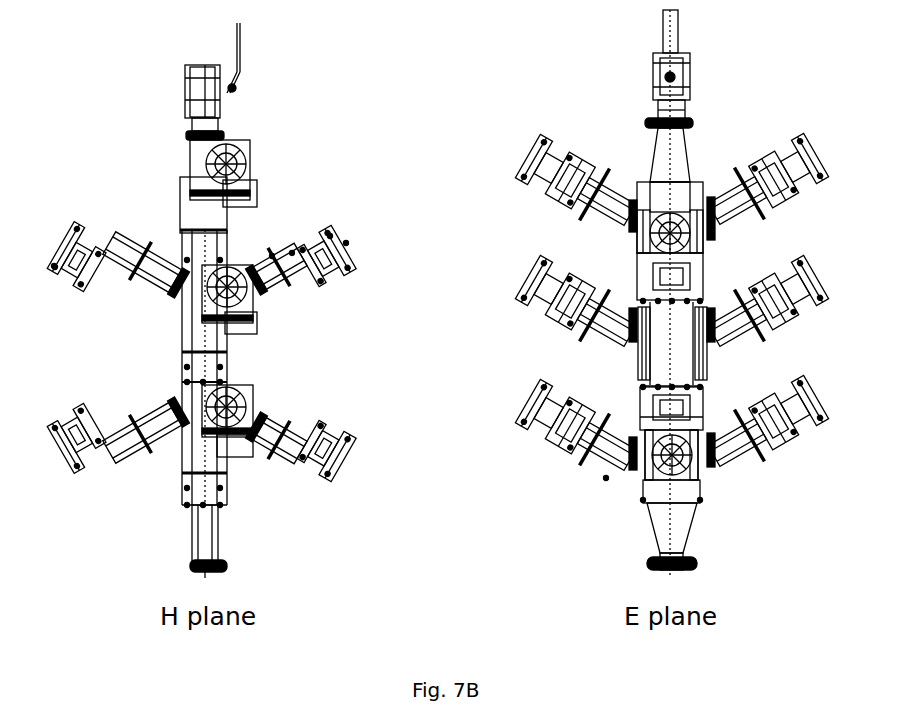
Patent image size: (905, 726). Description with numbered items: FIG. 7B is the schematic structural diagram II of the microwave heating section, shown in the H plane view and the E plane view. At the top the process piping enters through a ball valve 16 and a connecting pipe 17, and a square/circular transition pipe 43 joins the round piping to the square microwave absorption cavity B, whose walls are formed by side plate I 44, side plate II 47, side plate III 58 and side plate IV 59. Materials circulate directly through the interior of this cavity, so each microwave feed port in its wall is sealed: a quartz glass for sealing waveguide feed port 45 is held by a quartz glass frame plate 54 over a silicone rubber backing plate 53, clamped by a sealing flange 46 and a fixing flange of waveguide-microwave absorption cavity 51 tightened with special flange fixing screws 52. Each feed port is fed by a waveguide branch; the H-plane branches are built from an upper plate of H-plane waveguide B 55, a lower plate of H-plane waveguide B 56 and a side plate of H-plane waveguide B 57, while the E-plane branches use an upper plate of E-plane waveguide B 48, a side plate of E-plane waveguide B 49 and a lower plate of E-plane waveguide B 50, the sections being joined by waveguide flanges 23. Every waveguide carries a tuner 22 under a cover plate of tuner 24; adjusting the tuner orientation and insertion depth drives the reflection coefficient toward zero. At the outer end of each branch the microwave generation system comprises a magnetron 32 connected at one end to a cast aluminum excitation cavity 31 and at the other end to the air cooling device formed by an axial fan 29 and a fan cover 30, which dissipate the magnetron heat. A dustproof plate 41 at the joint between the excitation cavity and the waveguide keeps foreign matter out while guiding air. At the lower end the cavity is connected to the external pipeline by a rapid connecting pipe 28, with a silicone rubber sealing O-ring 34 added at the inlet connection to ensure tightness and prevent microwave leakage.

The ball valve 16 is at (187, 80).
The connecting pipe 17 is at (195, 118).
The square/circular transition pipe 43 is at (192, 157).
The side plate I of microwave absorption cavity B 44 is at (182, 232).
The axial fan 29 is at (72, 224).
The magnetron 32 is at (52, 265).
The tuner 22 is at (180, 300).
The cover plate of tuner 24 is at (180, 304).
The quartz glass for sealing waveguide feed port 45 is at (180, 307).
The sealing flange 46 is at (182, 383).
The side plate II of microwave absorption cavity B 47 is at (110, 463).
The rapid connecting pipe 28 is at (220, 133).
The waveguide flange 23 is at (262, 253).
The upper plate of E-plane waveguide B 48 is at (272, 255).
The cast aluminum excitation cavity 31 is at (292, 252).
The side plate of E-plane waveguide B 49 is at (330, 235).
The fan cover 30 is at (345, 242).
The lower plate of E-plane waveguide B 50 is at (255, 270).
The side plate of H-plane waveguide B 57 is at (813, 137).
The side plate III of microwave absorption cavity B 58 is at (704, 312).
The dustproof plate 41 is at (785, 270).
The side plate IV of microwave absorption cavity B 59 is at (705, 365).
The fixing flange of waveguide-microwave absorption cavity 51 is at (637, 316).
The special flange fixing screw 52 is at (637, 324).
The silicone rubber sealing O-ring 34 is at (640, 340).
The silicone rubber backing plate 53 is at (643, 371).
The quartz glass frame plate 54 is at (648, 375).
The upper plate of H-plane waveguide B 55 is at (632, 440).
The lower plate of H-plane waveguide B 56 is at (607, 477).